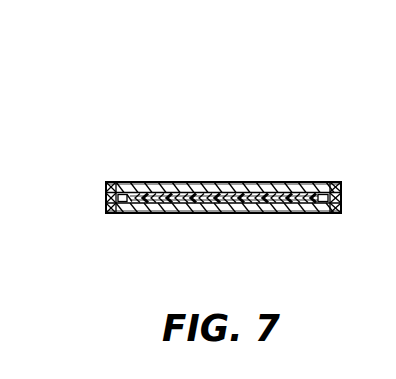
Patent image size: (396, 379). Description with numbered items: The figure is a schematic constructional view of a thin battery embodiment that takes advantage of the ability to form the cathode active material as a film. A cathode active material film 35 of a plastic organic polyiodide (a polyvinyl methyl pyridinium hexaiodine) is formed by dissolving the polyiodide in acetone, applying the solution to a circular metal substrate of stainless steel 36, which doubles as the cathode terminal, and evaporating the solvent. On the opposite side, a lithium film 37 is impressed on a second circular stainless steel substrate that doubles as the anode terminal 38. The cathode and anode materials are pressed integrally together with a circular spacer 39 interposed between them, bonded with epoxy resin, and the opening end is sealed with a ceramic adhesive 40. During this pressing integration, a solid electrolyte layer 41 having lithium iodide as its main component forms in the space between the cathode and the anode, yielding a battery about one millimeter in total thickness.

The cathode active material film 35 is at (231, 194).
The circular metal substrate of stainless steel 36 is at (312, 189).
The lithium film 37 is at (199, 213).
The anode terminal 38 is at (268, 208).
The circular spacer 39 is at (132, 213).
The ceramic adhesive 40 is at (105, 204).
The solid electrolyte layer 41 is at (187, 194).